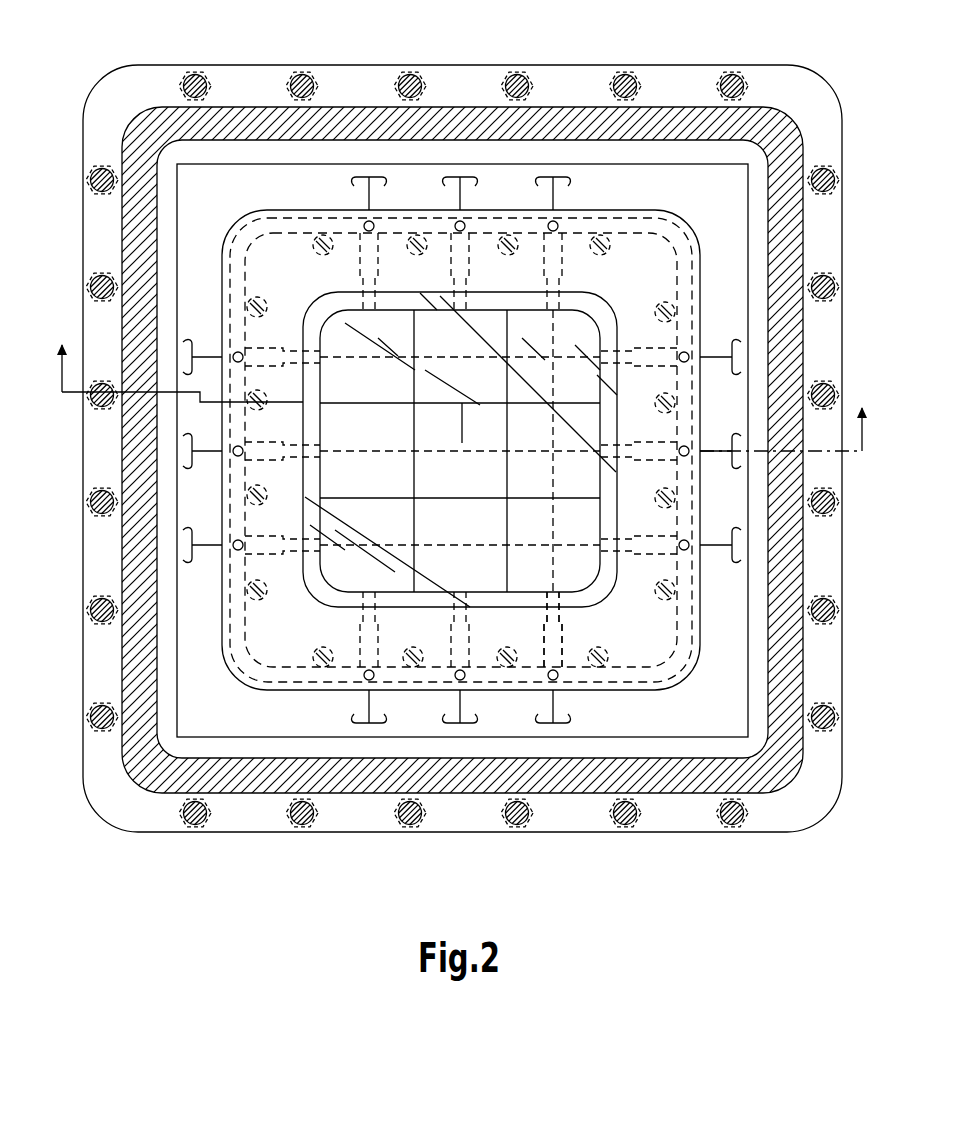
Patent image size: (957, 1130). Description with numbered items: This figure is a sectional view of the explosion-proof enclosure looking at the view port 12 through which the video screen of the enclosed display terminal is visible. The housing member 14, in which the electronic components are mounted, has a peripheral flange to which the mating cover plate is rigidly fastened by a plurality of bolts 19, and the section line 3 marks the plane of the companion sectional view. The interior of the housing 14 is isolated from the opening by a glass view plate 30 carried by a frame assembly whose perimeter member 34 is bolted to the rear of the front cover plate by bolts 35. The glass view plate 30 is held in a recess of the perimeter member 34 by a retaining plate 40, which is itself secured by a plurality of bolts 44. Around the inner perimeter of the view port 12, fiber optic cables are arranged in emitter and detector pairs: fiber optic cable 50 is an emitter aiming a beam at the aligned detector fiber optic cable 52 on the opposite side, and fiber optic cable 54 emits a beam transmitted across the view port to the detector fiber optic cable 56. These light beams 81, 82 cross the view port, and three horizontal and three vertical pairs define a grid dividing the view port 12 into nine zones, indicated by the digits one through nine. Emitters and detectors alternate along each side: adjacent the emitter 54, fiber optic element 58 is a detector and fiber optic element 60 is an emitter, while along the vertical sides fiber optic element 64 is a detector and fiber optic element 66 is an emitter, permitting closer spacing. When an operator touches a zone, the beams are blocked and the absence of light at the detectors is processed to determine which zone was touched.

The section line 3- 3 is at (462, 375).
The view port 12 is at (340, 345).
The housing member 14 is at (357, 120).
The bolts 19 is at (292, 82).
The glass view plate 30 is at (452, 488).
The perimeter member 34 is at (525, 602).
The bolts 35 is at (673, 598).
The retaining plate 40 is at (615, 632).
The bolts 44 is at (236, 354).
The fiber optic cable 50 is at (202, 367).
The fiber optic cable 52 is at (718, 366).
The fiber optic cable 54 is at (568, 184).
The fiber optic cable 56 is at (550, 710).
The fiber optic element 58 is at (466, 184).
The fiber optic element 60 is at (354, 184).
The fiber optic element 64 is at (202, 468).
The fiber optic element 66 is at (202, 561).
The row conductor 81 is at (483, 357).
The column conductor 82 is at (554, 392).